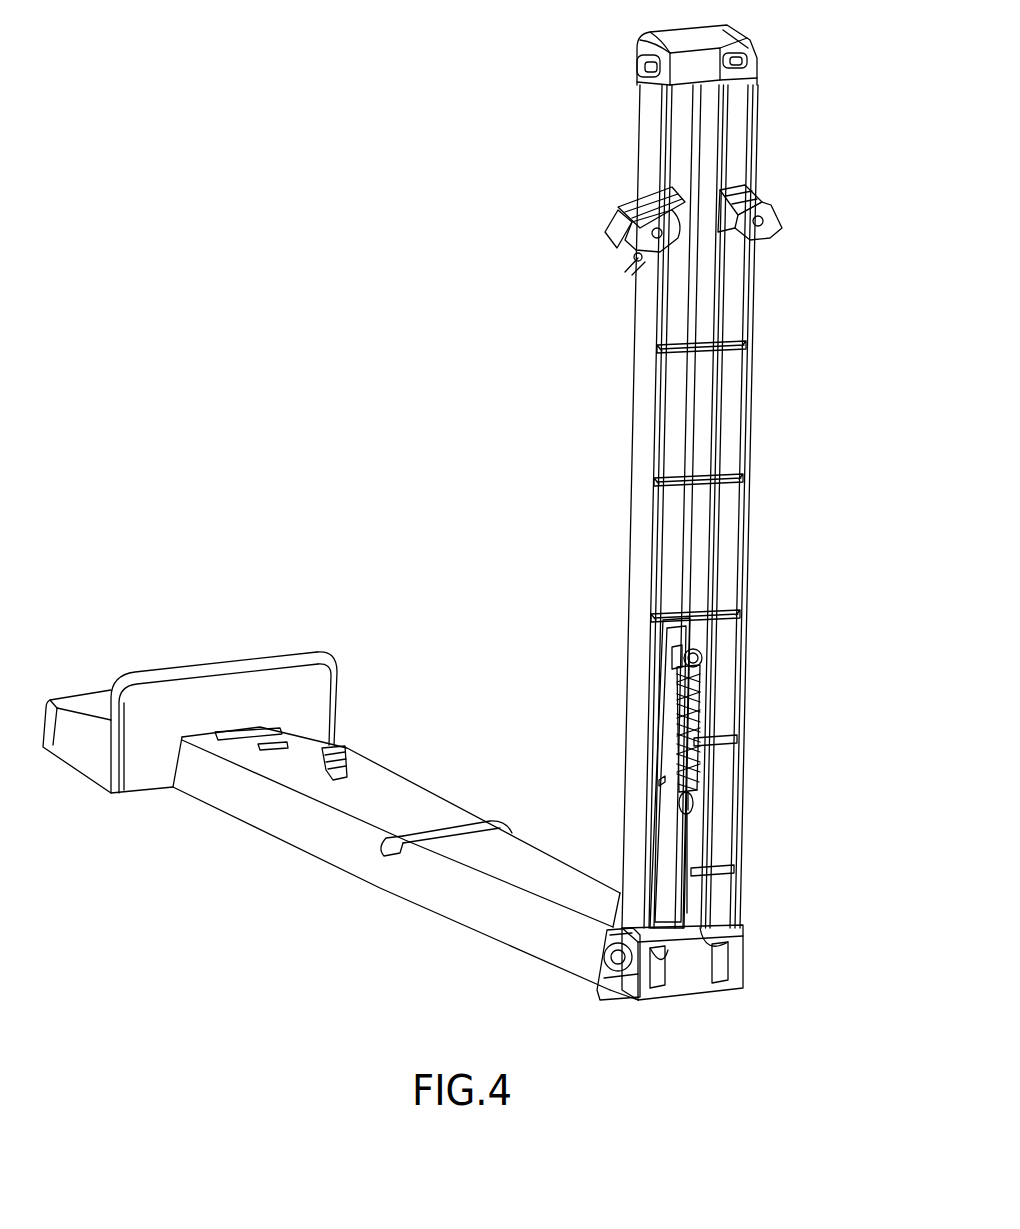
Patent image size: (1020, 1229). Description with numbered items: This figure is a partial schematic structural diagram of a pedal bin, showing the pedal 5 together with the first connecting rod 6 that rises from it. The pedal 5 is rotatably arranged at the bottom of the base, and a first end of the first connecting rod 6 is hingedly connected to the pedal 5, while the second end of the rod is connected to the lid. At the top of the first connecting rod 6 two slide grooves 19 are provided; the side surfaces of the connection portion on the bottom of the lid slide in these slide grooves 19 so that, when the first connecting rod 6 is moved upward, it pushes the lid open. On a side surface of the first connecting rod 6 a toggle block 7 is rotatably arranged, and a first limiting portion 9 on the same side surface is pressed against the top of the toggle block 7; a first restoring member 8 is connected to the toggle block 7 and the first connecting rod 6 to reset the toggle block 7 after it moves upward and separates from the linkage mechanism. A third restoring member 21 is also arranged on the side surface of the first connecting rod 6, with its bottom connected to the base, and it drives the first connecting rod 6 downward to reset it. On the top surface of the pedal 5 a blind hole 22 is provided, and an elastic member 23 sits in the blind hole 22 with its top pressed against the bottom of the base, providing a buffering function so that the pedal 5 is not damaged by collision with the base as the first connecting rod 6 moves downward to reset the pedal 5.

The pedal 5 is at (300, 828).
The first connecting rod 6 is at (736, 518).
The toggle block 7 is at (606, 238).
The first restoring member 8 is at (636, 254).
The first limiting portion 9 is at (637, 203).
The slide groove 19 is at (638, 66).
The third restoring member 21 is at (700, 727).
The blind hole 22 is at (338, 775).
The elastic member 23 is at (337, 748).